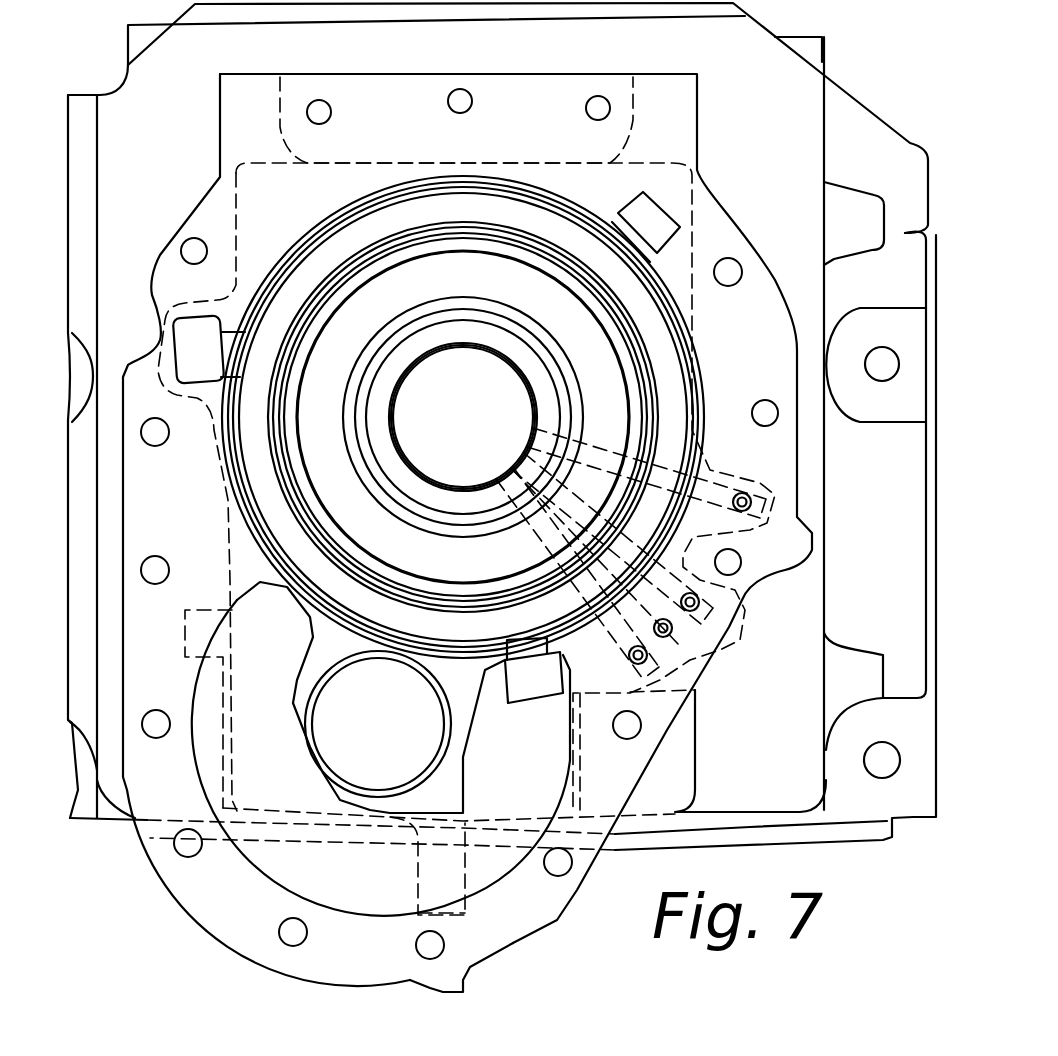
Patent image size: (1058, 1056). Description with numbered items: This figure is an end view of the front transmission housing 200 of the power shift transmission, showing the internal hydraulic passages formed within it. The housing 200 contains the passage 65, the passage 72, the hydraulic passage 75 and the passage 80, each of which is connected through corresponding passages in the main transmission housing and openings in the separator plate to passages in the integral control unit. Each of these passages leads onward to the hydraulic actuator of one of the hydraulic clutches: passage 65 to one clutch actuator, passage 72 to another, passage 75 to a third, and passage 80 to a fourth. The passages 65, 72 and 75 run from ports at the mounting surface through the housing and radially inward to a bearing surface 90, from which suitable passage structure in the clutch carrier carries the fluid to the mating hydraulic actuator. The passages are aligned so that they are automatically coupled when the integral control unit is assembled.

The passage 65 is at (757, 483).
The passage 72 is at (703, 602).
The hydraulic passage 75 is at (707, 640).
The passage 80 is at (630, 658).
The bearing surface 90 is at (503, 474).
The front transmission housing 200 is at (518, 942).